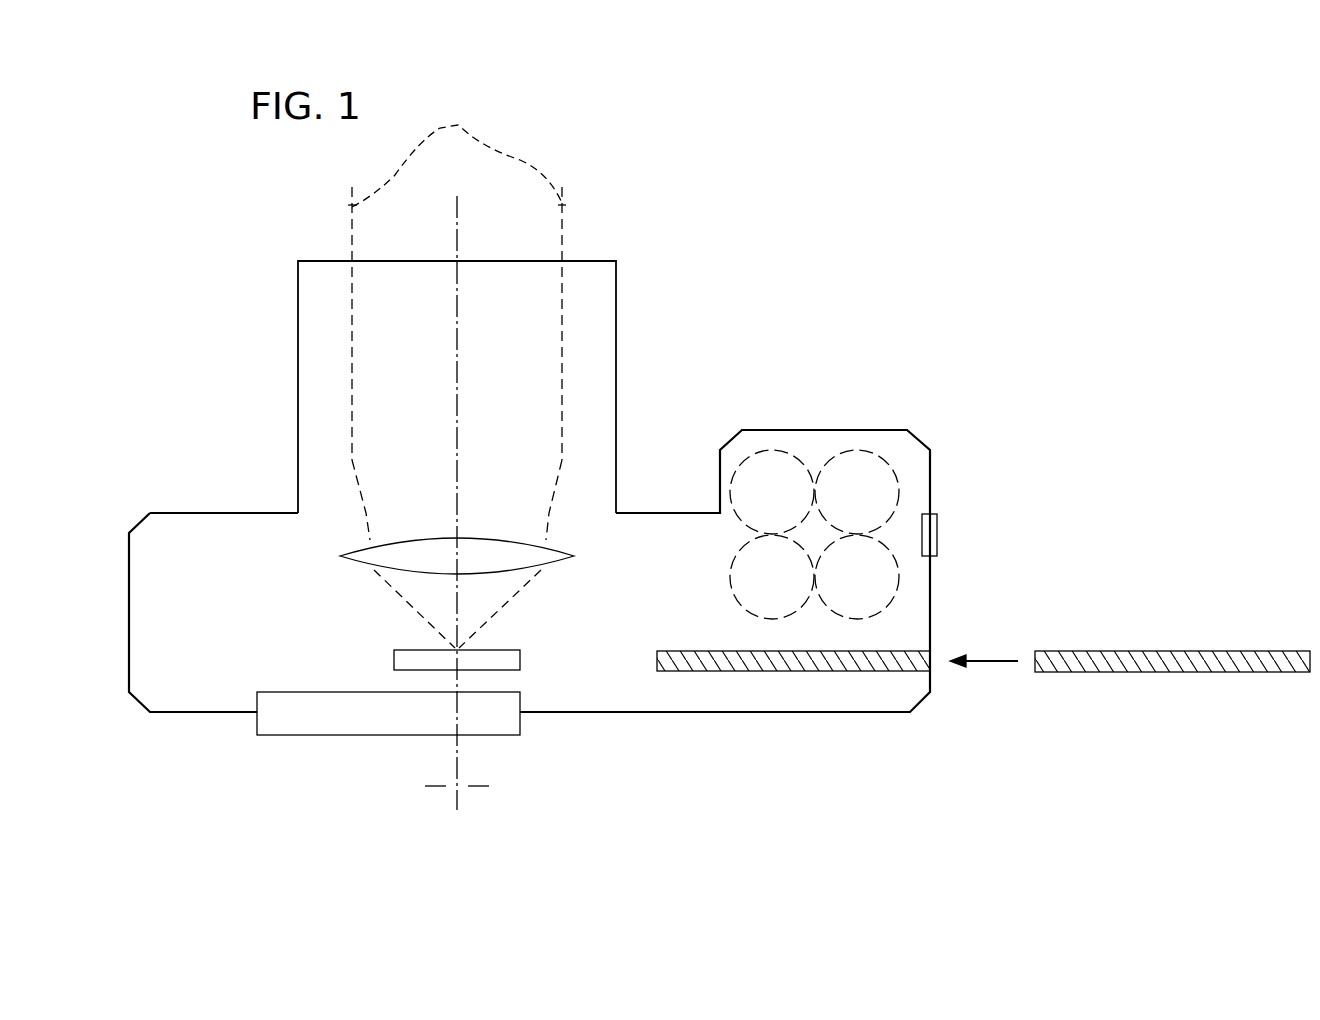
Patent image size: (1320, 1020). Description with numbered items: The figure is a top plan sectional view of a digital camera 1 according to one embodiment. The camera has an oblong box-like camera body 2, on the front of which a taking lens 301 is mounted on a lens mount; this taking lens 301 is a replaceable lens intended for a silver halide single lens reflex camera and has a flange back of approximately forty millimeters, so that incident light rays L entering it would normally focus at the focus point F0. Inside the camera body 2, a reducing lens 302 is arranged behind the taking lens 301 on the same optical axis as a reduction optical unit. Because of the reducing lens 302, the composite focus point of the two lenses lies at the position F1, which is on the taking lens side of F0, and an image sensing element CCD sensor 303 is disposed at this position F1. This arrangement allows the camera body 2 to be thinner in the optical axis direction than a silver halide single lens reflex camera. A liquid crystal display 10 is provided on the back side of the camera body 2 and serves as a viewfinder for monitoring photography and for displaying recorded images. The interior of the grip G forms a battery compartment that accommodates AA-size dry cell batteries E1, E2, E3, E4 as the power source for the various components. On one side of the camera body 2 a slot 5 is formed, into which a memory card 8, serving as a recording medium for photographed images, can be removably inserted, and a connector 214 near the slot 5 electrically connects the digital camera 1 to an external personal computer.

The digital camera 1 is at (575, 449).
The camera body 2 is at (622, 712).
The slot 5 is at (770, 672).
The memory card 8 is at (1092, 651).
The liquid crystal display (LCD) 10 is at (298, 728).
The connector 214 is at (940, 535).
The taking lens 301 is at (304, 345).
The reducing lens 302 is at (345, 555).
The CCD sensor 303 is at (508, 650).
The incident light rays L is at (457, 449).
The grip G is at (750, 430).
The battery E1 is at (862, 546).
The battery E2 is at (857, 492).
The battery E3 is at (772, 577).
The battery E4 is at (857, 577).
The focus point F0 is at (455, 786).
The composite focus point F1 is at (450, 648).